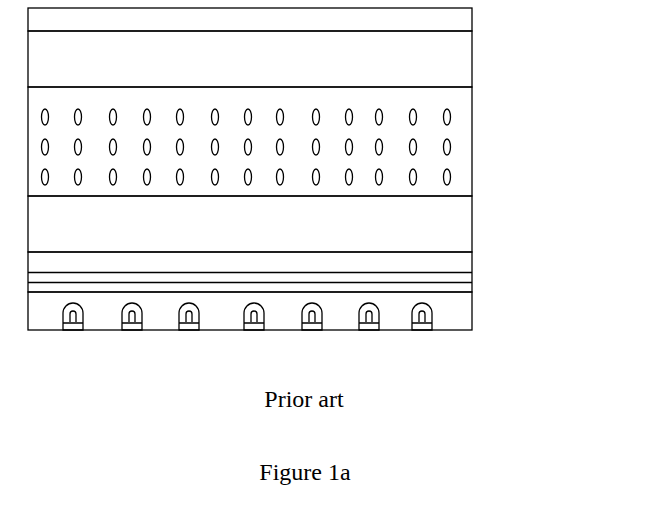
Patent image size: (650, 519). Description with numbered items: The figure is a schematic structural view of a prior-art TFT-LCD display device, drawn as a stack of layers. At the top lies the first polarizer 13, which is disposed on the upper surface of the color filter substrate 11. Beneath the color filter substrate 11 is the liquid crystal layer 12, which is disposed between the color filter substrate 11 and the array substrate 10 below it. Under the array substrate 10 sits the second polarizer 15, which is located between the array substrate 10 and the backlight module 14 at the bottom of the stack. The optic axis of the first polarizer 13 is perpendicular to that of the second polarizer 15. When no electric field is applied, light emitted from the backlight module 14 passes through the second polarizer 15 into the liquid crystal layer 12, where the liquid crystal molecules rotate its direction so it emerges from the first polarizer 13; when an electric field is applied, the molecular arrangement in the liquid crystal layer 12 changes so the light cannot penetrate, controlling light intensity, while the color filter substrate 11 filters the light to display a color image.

The first polarizer 13 is at (460, 15).
The color filter substrate 11 is at (460, 58).
The liquid crystal layer 12 is at (460, 145).
The array substrate 10 is at (460, 227).
The second polarizer 15 is at (460, 260).
The backlight module 14 is at (460, 303).